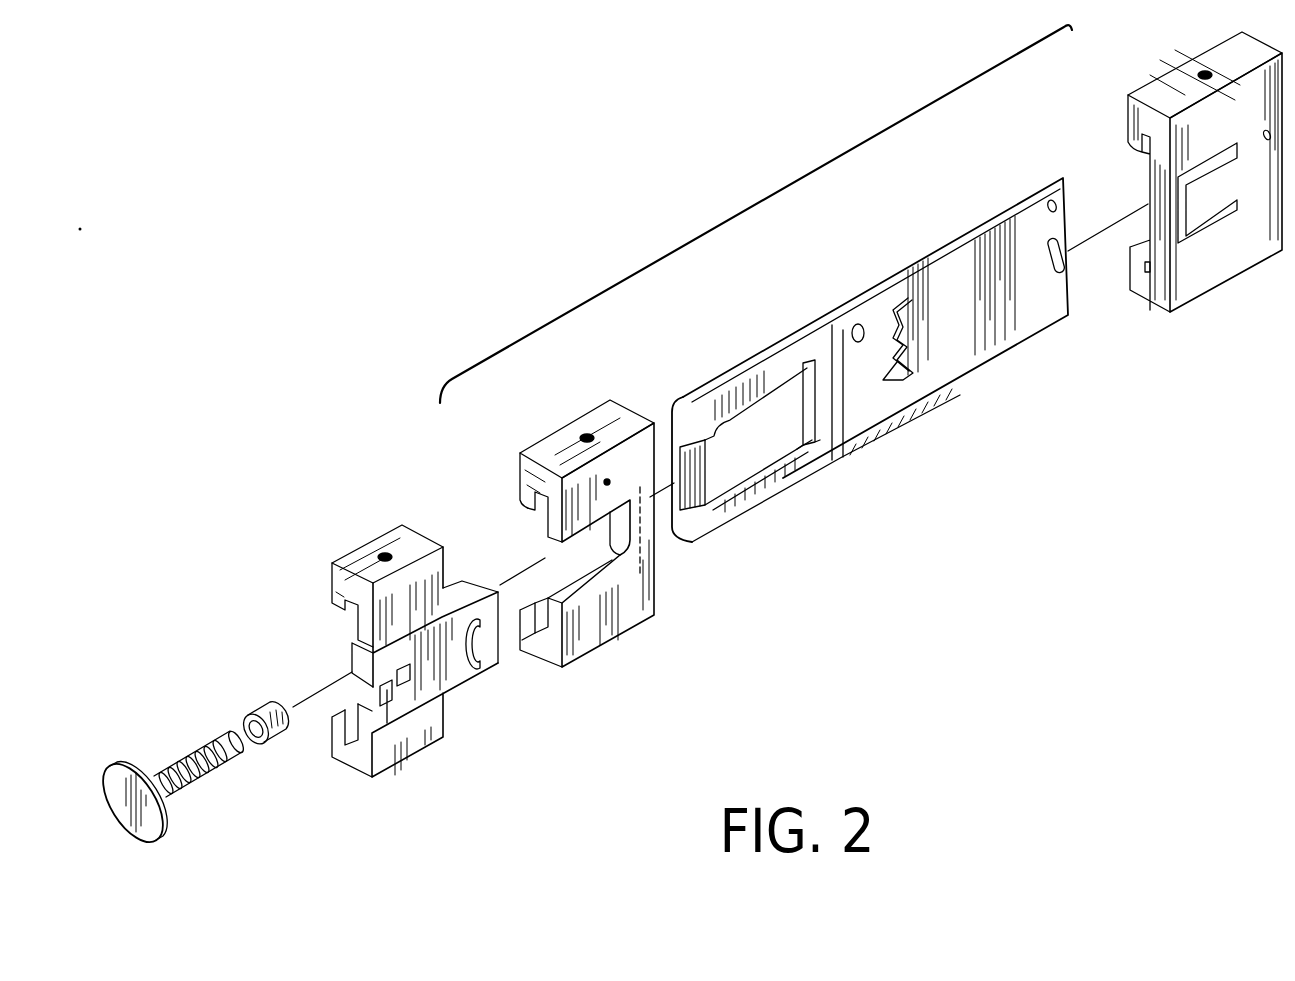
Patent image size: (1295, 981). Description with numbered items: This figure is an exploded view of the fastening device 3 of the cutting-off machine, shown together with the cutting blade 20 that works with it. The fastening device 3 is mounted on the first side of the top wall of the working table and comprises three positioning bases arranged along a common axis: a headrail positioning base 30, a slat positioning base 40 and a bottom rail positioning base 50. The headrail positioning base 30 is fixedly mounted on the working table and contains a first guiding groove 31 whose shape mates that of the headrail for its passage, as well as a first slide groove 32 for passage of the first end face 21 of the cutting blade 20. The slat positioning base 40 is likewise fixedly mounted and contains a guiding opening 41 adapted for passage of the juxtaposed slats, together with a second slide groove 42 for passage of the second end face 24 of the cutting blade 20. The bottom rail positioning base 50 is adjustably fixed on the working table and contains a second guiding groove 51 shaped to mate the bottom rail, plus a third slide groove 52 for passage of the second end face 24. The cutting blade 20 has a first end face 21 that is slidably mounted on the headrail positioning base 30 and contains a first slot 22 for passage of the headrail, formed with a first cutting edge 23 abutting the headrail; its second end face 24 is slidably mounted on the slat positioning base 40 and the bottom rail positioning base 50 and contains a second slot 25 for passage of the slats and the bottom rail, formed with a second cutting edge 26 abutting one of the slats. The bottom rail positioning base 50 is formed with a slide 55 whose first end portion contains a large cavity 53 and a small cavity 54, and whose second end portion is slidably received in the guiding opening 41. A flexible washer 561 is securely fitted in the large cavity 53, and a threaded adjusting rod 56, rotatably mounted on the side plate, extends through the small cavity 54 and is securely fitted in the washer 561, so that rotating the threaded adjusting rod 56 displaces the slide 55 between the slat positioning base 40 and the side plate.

The fastening device 3 is at (766, 195).
The cutting blade 20 is at (875, 349).
The first end face 21 is at (966, 260).
The first slot 22 is at (861, 324).
The first cutting edge 23 is at (879, 395).
The second end face 24 is at (754, 426).
The second slot 25 is at (716, 424).
The second cutting edge 26 is at (804, 447).
The headrail positioning base 30 is at (1176, 207).
The first guiding groove 31 is at (1198, 157).
The first slide groove 32 is at (1147, 273).
The slat positioning base 40 is at (587, 548).
The guiding opening 41 is at (607, 480).
The second slide groove 42 is at (540, 632).
The bottom rail positioning base 50 is at (420, 661).
The second guiding groove 51 is at (480, 668).
The third slide groove 52 is at (352, 730).
The large cavity 53 is at (400, 682).
The small cavity 54 is at (380, 692).
The slide 55 is at (470, 591).
The threaded adjusting rod 56 is at (153, 808).
The flexible washer 561 is at (277, 743).